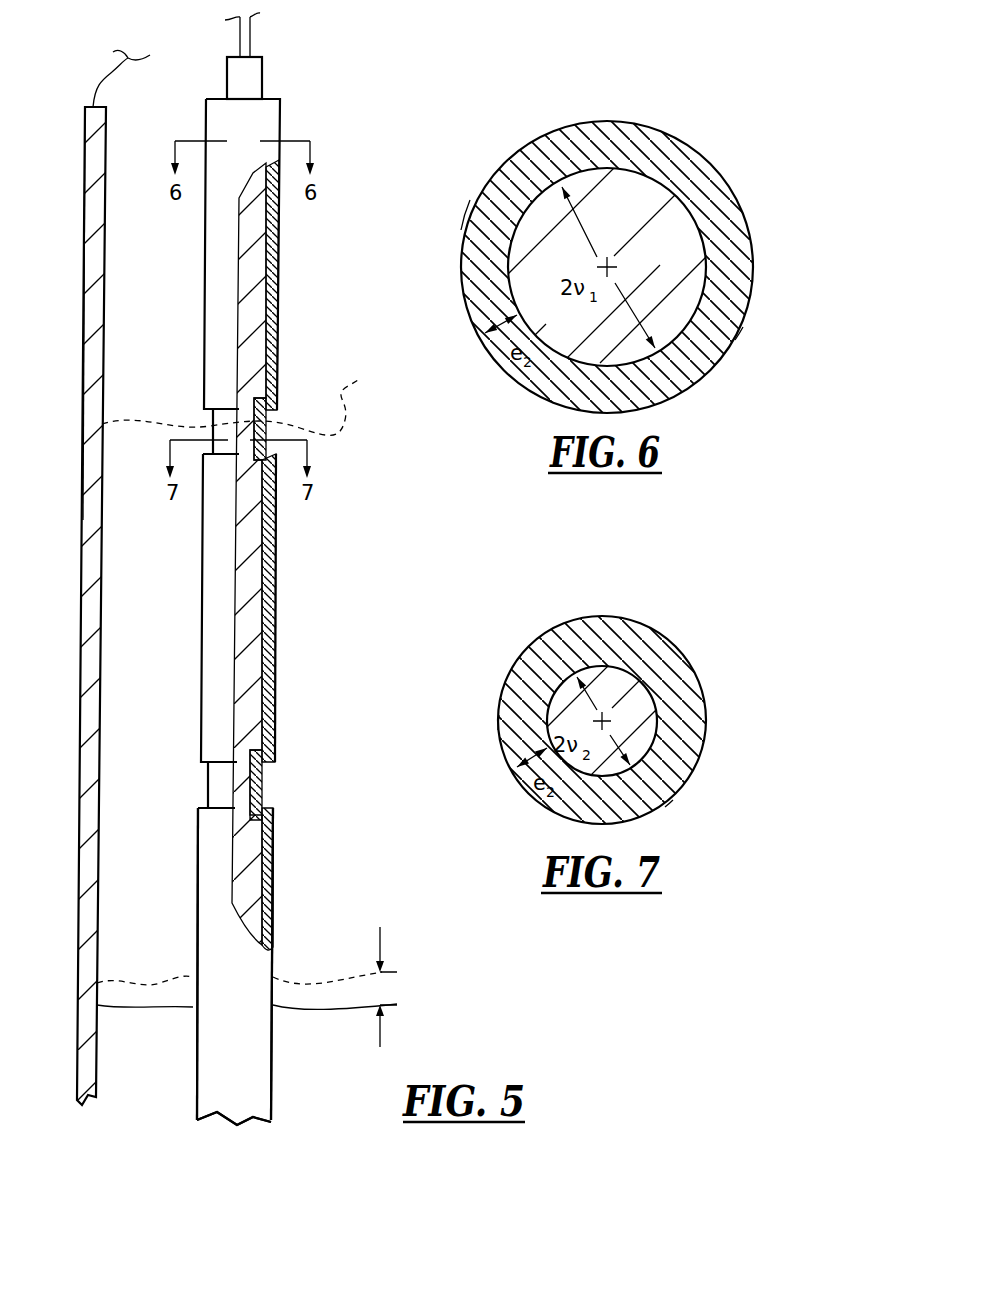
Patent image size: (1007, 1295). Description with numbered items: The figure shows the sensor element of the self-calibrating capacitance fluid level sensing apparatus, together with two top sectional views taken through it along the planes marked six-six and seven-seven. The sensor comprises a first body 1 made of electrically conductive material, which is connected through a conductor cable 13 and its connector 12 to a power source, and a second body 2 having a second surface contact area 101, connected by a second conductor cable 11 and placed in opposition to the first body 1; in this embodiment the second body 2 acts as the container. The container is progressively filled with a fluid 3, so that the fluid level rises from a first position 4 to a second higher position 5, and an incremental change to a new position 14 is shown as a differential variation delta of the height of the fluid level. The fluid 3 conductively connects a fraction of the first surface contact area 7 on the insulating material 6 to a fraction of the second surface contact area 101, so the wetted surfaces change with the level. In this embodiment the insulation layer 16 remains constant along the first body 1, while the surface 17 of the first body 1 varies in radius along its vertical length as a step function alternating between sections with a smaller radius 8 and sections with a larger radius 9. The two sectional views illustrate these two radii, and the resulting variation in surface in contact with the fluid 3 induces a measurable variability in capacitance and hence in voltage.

In FIG. 5, the first body 1 is at (368, 60).
In FIG. 6, the first body 1 is at (486, 147).
In FIG. 7, the first body 1 is at (488, 633).
In FIG. 5, the second body 2 is at (97, 1045).
In FIG. 5, the fluid 3 is at (310, 1097).
In FIG. 5, the first position of fluid level 4 is at (298, 1008).
In FIG. 5, the second higher position of fluid level 5 is at (236, 403).
In FIG. 5, the insulating material 6 is at (265, 118).
In FIG. 6, the insulating material 6 is at (675, 133).
In FIG. 7, the insulating material 6 is at (655, 630).
In FIG. 5, the first surface contact area 7 is at (273, 858).
In FIG. 6, the first surface contact area 7 is at (743, 327).
In FIG. 7, the first surface contact area 7 is at (673, 800).
In FIG. 5, the section with smaller radius 8 is at (208, 793).
In FIG. 7, the section with smaller radius 8 is at (499, 741).
In FIG. 5, the section with larger radius 9 is at (197, 843).
In FIG. 6, the section with larger radius 9 is at (461, 253).
In FIG. 5, the second conductor cable 11 is at (110, 85).
In FIG. 5, the connector head 12 is at (262, 82).
In FIG. 5, the conductor cable 13 is at (240, 37).
In FIG. 5, the new position of fluid level 14 is at (437, 963).
In FIG. 5, the insulation layer 16 is at (274, 600).
In FIG. 6, the insulation layer 16 is at (698, 188).
In FIG. 7, the insulation layer 16 is at (683, 710).
In FIG. 5, the surface of the first body 17 is at (247, 707).
In FIG. 6, the surface of the first body 17 is at (700, 233).
In FIG. 7, the surface of the first body 17 is at (653, 672).
In FIG. 5, the second surface contact area 101 is at (103, 610).